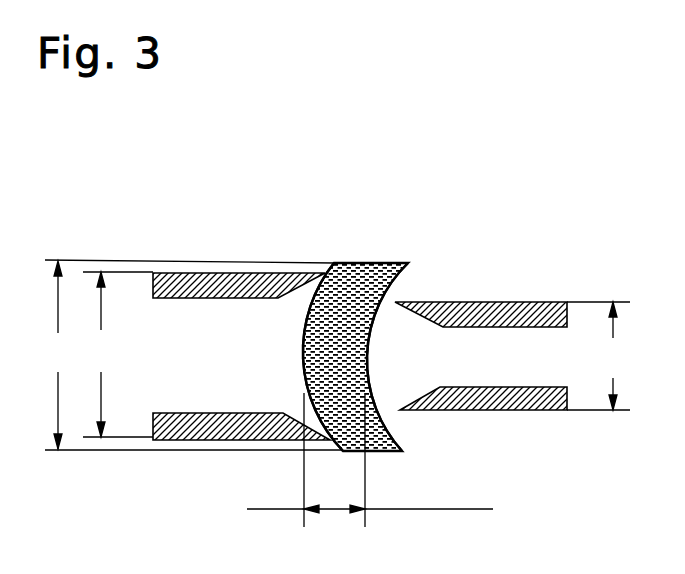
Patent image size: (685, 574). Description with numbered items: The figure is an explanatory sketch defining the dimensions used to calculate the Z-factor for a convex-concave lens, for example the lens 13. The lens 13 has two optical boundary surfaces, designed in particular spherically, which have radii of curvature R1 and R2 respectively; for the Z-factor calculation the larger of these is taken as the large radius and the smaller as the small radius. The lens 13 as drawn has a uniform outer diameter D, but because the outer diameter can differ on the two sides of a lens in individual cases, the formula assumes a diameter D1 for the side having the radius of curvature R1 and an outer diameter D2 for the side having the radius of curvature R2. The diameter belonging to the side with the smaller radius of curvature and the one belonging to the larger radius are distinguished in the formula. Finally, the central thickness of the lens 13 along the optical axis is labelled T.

The lens 13 is at (361, 263).
The radius of curvature R1 is at (298, 357).
The radius of curvature R2 is at (394, 357).
The outer diameter D is at (193, 355).
The diameter D1 is at (118, 354).
The outer diameter D2 is at (598, 356).
The central thickness T is at (370, 460).